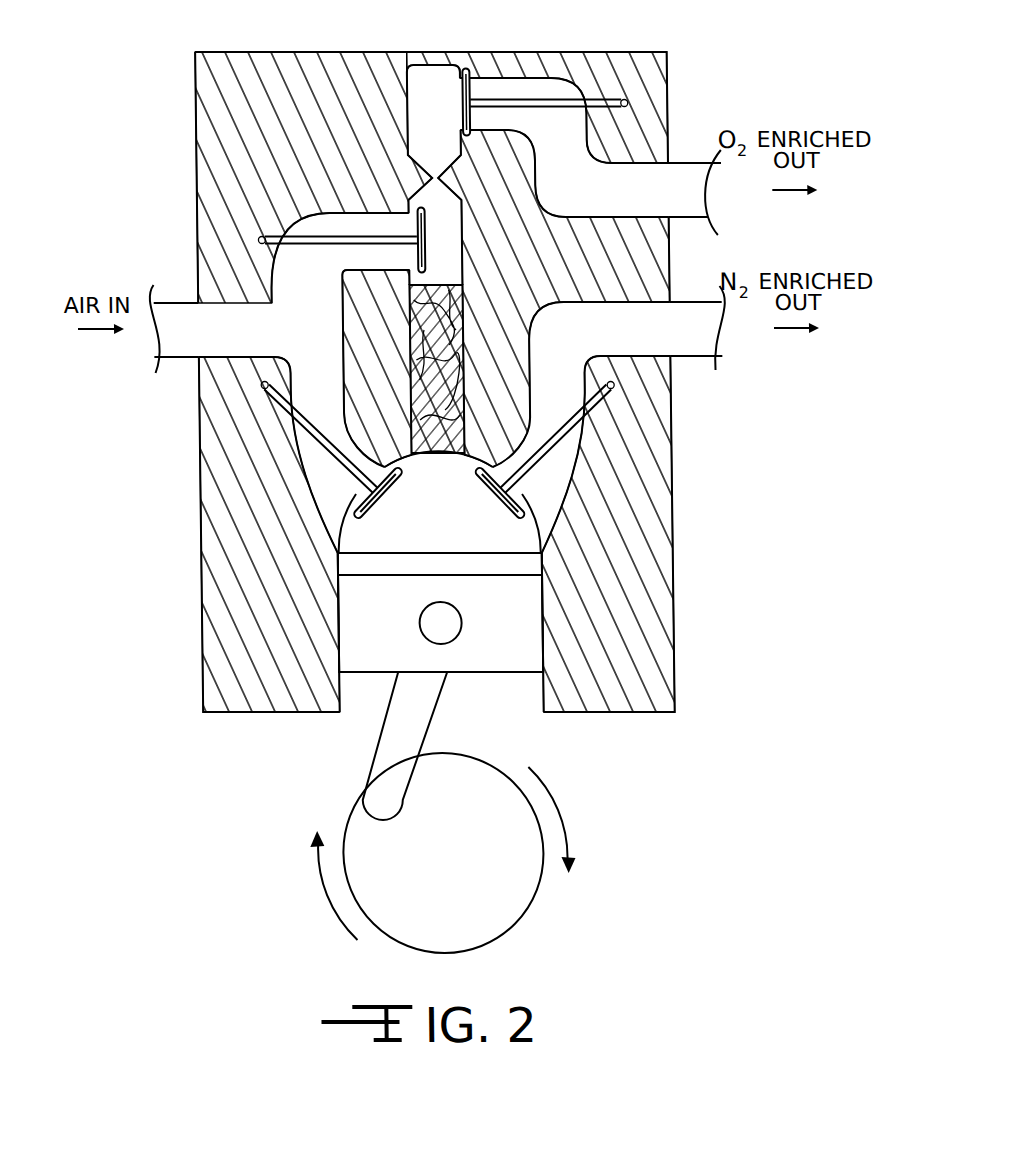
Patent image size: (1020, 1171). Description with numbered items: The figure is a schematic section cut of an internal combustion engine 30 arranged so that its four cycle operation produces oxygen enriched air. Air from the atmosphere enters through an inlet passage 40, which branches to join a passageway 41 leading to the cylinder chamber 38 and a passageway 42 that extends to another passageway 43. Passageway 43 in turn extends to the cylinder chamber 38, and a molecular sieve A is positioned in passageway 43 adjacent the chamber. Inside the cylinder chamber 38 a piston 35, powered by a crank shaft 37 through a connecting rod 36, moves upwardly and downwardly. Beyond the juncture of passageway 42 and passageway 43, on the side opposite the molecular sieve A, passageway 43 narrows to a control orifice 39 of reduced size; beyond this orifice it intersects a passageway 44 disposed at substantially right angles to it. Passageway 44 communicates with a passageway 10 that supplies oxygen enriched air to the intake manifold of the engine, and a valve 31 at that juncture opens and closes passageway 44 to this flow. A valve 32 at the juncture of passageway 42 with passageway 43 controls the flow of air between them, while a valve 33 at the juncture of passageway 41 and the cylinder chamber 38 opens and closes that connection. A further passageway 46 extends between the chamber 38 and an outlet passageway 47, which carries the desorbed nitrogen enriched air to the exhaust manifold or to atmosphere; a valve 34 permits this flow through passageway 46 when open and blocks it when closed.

The internal combustion engine 30 is at (208, 51).
The valve 31 is at (538, 97).
The valve 32 is at (320, 227).
The valve 33 is at (326, 454).
The valve 34 is at (540, 450).
The piston 35 is at (377, 631).
The connecting rod 36 is at (391, 720).
The crank shaft 37 is at (373, 862).
The cylinder chamber 38 is at (416, 526).
The control orifice 39 is at (432, 178).
The inlet passage 40 is at (206, 328).
The passageway 41 is at (308, 367).
The passageway 42 is at (354, 208).
The passageway 43 is at (444, 210).
The passageway 44 is at (508, 92).
The passageway 46 is at (556, 367).
The passageway (outlet tube) 47 is at (672, 323).
The passageway 10 is at (682, 187).
The molecular sieve A is at (433, 345).